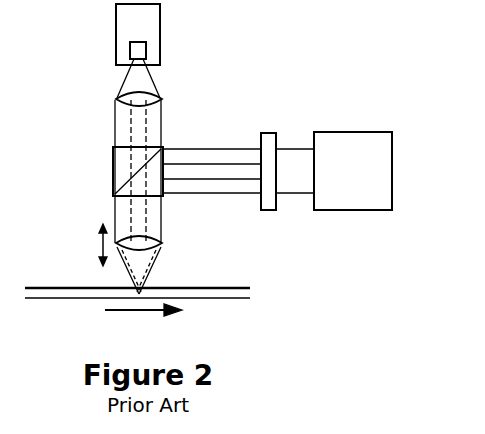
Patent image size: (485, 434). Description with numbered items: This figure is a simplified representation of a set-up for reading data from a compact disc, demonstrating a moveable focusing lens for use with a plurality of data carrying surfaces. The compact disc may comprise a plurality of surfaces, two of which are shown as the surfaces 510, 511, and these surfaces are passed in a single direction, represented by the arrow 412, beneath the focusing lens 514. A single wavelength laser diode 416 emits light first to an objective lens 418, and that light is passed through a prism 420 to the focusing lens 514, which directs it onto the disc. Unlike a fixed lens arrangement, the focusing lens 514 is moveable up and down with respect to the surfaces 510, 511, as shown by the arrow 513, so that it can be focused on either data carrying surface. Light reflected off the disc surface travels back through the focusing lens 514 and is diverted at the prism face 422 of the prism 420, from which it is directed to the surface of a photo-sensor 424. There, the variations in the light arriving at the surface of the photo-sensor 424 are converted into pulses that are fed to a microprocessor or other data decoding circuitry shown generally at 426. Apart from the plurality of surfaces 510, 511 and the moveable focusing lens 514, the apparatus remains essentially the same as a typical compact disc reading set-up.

The single wavelength laser diode 416 is at (130, 51).
The objective lens 418 is at (116, 100).
The prism 420 is at (113, 180).
The prism face 422 is at (162, 147).
The photo-sensor 424 is at (270, 132).
The data decoding circuitry 426 is at (367, 168).
The arrow 513 is at (100, 245).
The focusing lens 514 is at (161, 238).
The surface 510 is at (205, 288).
The surface 511 is at (226, 297).
The arrow 412 is at (139, 300).